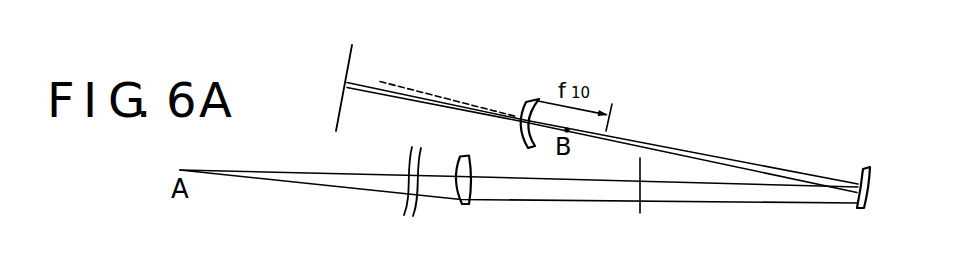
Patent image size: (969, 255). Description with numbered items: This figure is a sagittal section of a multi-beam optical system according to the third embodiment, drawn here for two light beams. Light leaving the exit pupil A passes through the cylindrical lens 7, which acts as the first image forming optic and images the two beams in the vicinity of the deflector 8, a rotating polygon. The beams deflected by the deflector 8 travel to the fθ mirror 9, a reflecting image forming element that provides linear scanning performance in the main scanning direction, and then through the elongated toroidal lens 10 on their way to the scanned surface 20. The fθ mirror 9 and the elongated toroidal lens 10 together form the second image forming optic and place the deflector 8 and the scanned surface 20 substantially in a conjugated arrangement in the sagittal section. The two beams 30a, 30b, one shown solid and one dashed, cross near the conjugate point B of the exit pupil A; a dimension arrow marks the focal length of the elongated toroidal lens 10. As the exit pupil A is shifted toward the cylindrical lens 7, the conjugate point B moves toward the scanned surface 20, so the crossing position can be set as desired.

The scanned surface 20 is at (353, 70).
The light beam (solid rays) 30a is at (357, 89).
The light beam (dashed ray) 30b is at (352, 82).
The elongated toroidal lens 10 is at (524, 103).
The cylindrical lens 7 is at (462, 166).
The deflector 8 is at (639, 171).
The fθ mirror 9 is at (858, 168).